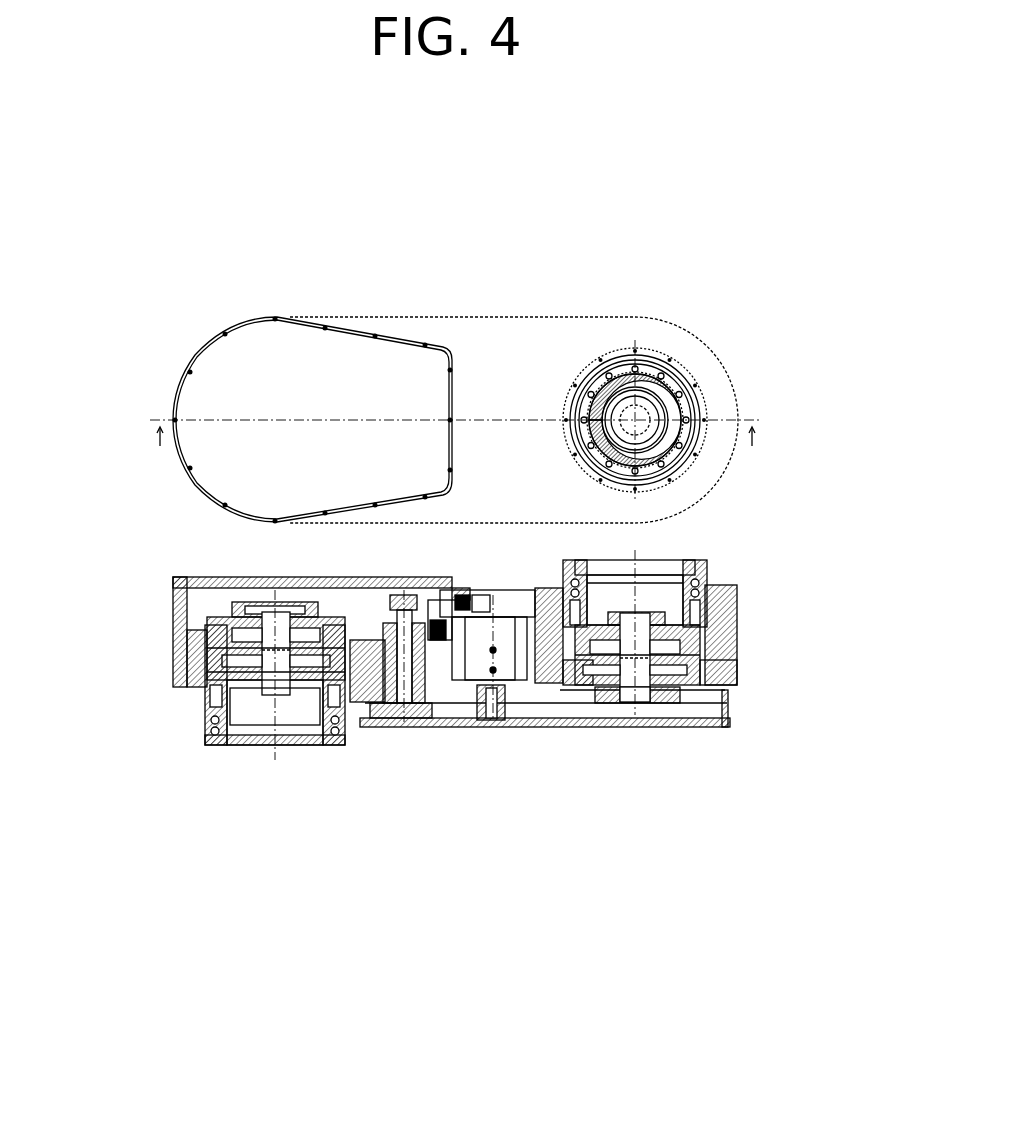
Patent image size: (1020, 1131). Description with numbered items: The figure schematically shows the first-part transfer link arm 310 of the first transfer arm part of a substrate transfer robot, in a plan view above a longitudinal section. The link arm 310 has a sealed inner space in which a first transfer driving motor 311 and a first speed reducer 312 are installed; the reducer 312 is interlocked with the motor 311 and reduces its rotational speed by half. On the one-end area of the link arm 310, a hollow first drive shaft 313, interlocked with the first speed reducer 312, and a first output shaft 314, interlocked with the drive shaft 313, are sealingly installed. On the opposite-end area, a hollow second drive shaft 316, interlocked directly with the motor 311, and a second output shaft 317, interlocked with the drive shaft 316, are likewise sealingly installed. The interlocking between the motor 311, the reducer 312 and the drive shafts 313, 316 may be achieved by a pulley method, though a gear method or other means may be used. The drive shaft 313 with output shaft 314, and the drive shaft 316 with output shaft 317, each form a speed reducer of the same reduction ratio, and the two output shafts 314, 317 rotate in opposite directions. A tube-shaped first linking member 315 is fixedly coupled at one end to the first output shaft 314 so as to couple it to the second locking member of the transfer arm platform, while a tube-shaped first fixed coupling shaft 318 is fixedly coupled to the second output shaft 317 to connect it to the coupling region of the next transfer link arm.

The (1_1)-st transfer link arm 310 is at (156, 216).
The first transfer driving motor 311 is at (505, 690).
The first speed reducer 312 is at (403, 690).
The (1_1)-st drive shaft 313 is at (275, 690).
The (1_1)-st output shaft 314 is at (173, 686).
The first linking member 315 is at (212, 745).
The (1_2)-nd drive shaft 316 is at (640, 685).
The (1_2)-nd output shaft 317 is at (733, 680).
The first fixed coupling shaft 318 is at (737, 605).